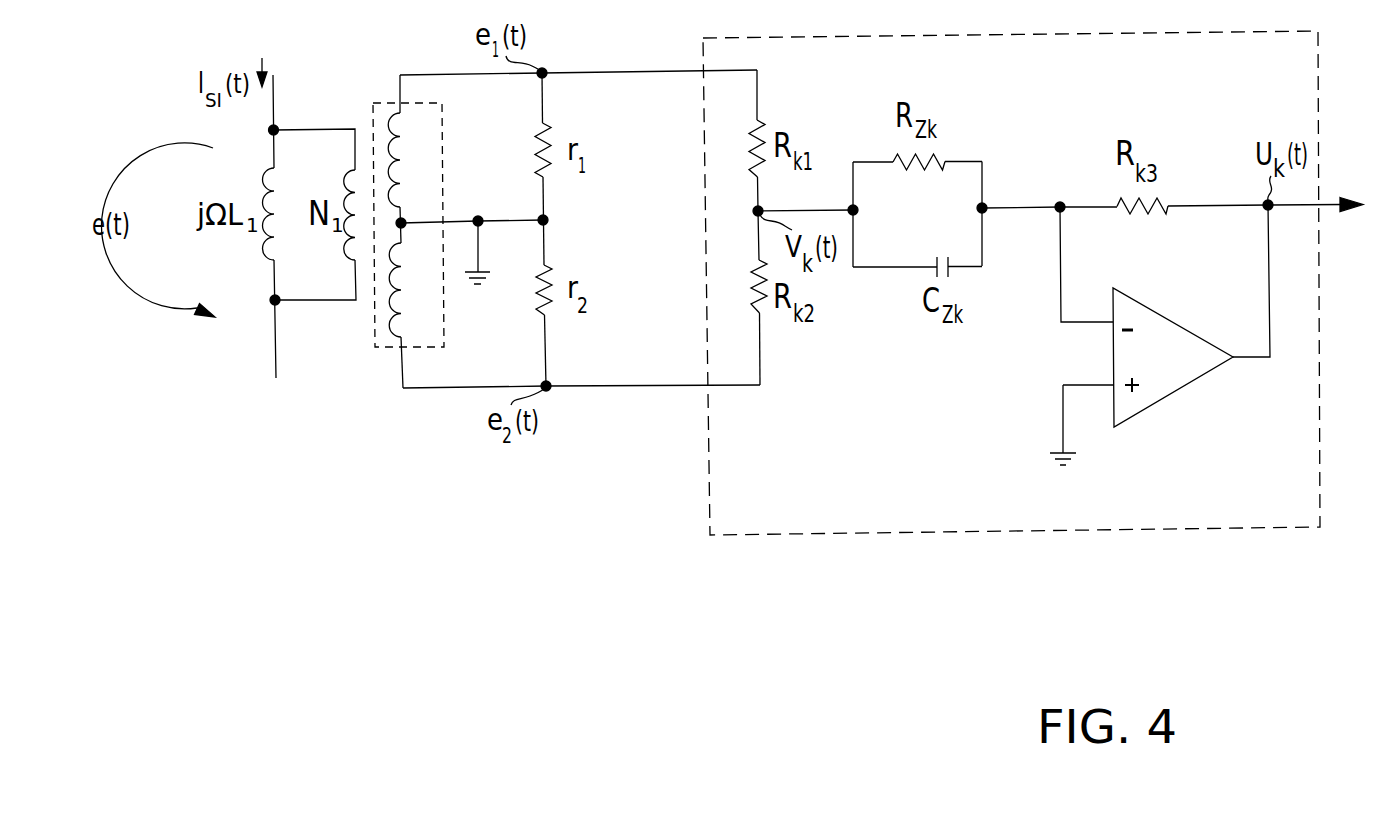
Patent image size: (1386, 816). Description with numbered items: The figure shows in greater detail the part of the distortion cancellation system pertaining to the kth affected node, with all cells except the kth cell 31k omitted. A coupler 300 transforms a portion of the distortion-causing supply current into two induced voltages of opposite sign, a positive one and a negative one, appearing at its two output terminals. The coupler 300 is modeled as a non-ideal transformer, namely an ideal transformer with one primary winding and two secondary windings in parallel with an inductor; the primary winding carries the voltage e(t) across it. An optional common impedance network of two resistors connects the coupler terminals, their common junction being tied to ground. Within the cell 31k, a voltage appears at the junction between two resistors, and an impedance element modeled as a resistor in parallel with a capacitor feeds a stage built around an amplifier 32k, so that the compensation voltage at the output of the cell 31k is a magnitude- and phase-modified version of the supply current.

The coupler 300 is at (380, 350).
The operational amplifier 32k is at (1188, 383).
The kth cell 31k is at (1272, 519).